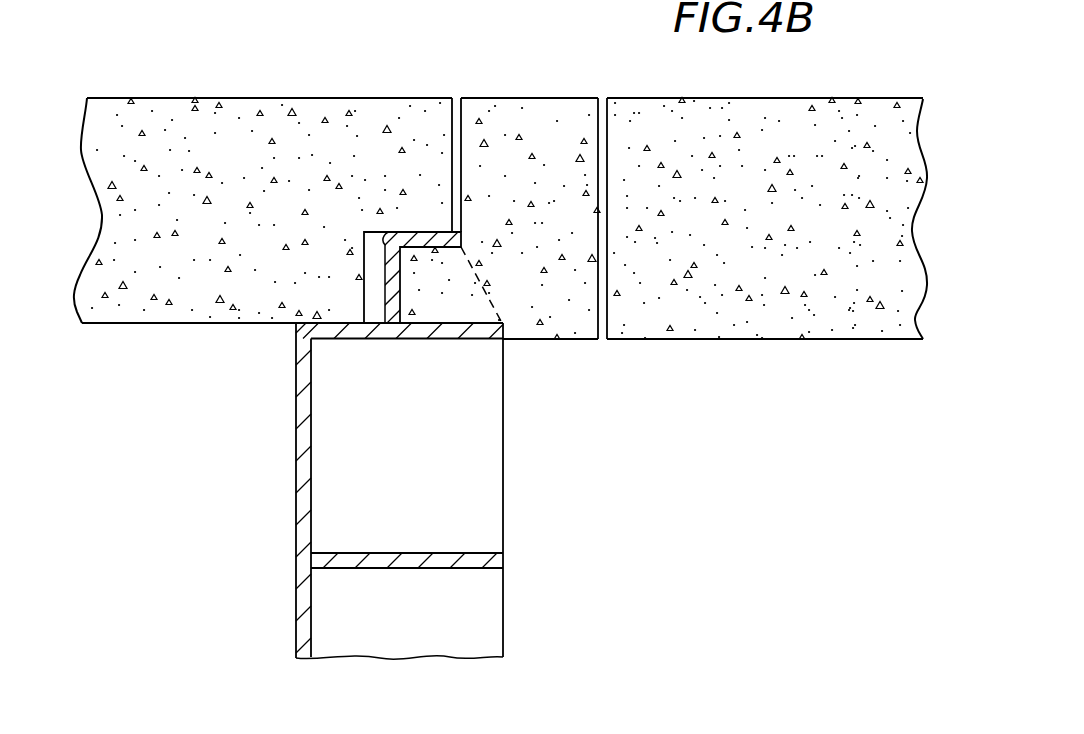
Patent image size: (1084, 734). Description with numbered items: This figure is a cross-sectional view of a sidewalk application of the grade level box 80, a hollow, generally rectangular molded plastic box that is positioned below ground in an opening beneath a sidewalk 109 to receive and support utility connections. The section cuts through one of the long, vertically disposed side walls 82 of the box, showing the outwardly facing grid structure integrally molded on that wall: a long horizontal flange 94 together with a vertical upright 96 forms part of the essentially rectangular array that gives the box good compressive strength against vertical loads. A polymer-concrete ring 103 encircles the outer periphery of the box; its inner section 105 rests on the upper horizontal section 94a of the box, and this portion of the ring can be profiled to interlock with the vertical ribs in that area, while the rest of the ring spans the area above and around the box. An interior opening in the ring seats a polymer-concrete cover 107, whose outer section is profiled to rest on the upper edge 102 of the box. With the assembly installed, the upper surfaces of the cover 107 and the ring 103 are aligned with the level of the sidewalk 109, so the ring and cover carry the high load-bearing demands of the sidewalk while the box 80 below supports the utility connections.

The grade level box 80 is at (540, 520).
The side wall 82 is at (300, 430).
The horizontal flange 94 is at (432, 560).
The upper horizontal section 94a is at (428, 330).
The vertical upright 96 is at (477, 478).
The upper edge 102 is at (420, 240).
The polymer-concrete ring 103 is at (532, 115).
The inner section 105 is at (442, 300).
The polymer-concrete cover 107 is at (257, 133).
The sidewalk 109 is at (748, 122).